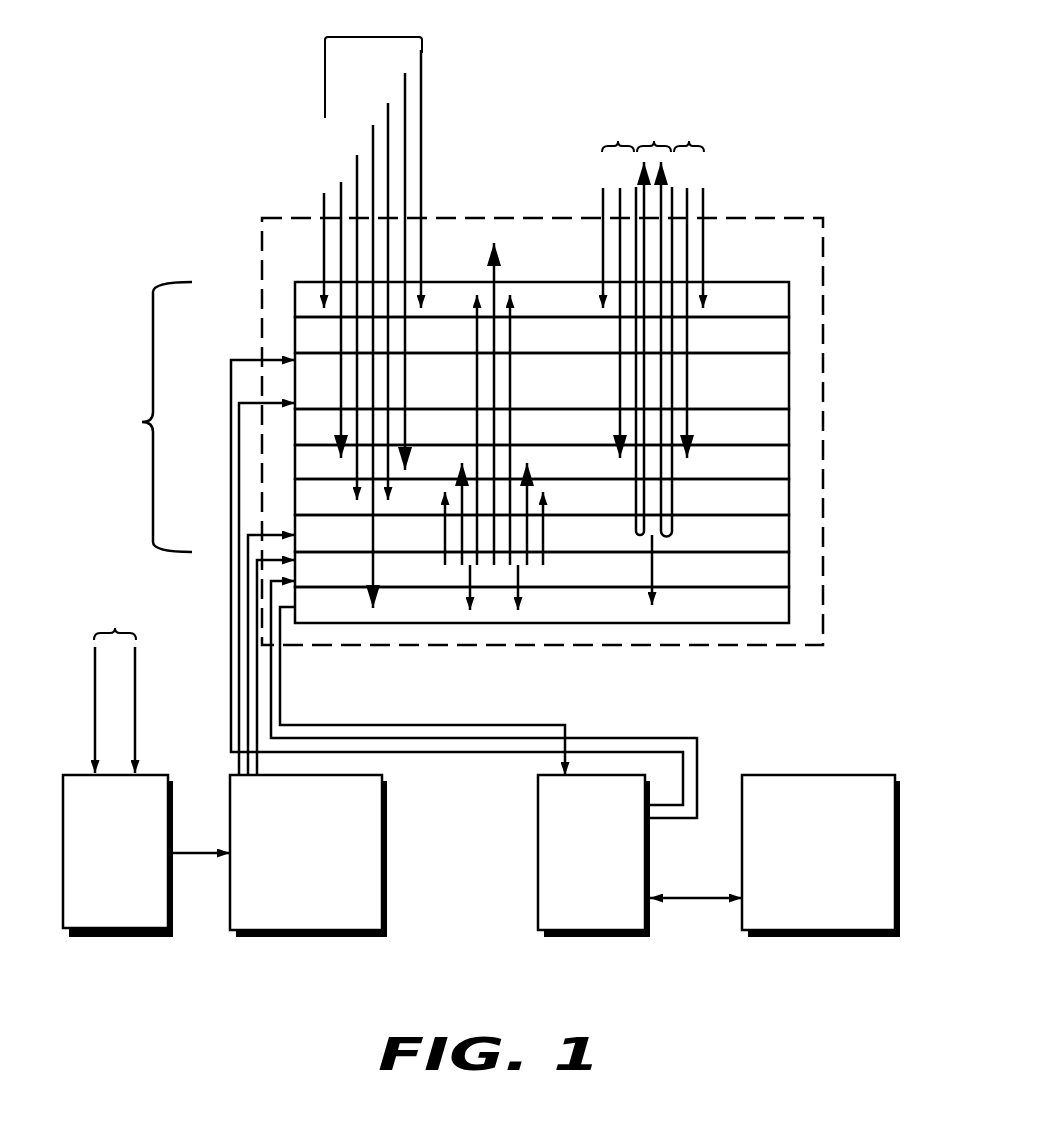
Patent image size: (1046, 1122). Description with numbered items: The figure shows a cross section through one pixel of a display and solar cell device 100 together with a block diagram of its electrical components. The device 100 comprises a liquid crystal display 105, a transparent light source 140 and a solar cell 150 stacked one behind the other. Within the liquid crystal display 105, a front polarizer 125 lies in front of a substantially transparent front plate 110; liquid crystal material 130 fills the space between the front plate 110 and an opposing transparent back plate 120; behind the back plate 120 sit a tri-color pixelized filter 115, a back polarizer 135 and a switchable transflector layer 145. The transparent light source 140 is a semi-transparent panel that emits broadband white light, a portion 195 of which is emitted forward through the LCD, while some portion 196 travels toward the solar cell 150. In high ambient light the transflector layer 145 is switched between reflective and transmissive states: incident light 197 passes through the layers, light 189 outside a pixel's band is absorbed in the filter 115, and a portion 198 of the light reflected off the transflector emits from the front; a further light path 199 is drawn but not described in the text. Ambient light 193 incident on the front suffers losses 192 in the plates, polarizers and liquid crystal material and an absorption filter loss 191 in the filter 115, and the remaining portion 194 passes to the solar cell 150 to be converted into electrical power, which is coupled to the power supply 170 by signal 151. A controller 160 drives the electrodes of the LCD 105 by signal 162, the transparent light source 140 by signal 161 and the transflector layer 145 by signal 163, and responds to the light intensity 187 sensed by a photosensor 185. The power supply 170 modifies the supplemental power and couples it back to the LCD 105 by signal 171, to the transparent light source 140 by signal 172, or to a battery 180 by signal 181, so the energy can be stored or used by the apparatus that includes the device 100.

The display and solar cell device 100 is at (758, 217).
The liquid crystal display 105 is at (140, 425).
The front plate 110 is at (789, 335).
The tri-color pixelized filter 115 is at (789, 463).
The back plate 120 is at (789, 428).
The front polarizer 125 is at (789, 300).
The liquid crystal material 130 is at (789, 382).
The back polarizer 135 is at (789, 498).
The transparent light source 140 is at (789, 570).
The switchable transflector layer 145 is at (789, 535).
The solar cell 150 is at (789, 605).
The signal 151 is at (452, 723).
The controller 160 is at (365, 937).
The signal 161 is at (255, 659).
The signal 162 is at (237, 733).
The signal 163 is at (246, 622).
The power supply 170 is at (628, 937).
The signal 171 is at (229, 585).
The signal 172 is at (268, 697).
The battery 180 is at (875, 937).
The signal 181 is at (700, 896).
The photosensor 185 is at (148, 937).
The light intensity 187 is at (117, 626).
The light 189 is at (603, 196).
The absorption filter loss 191 is at (341, 182).
The losses 192 is at (324, 208).
The ambient light 193 is at (373, 33).
The portion of ambient light 194 is at (373, 131).
The portion of emitted light 195 is at (492, 256).
The portion of emitted light 196 is at (468, 598).
The incident light 197 is at (618, 139).
The portion of reflected light 198 is at (653, 140).
The absorbed light 199 is at (655, 598).